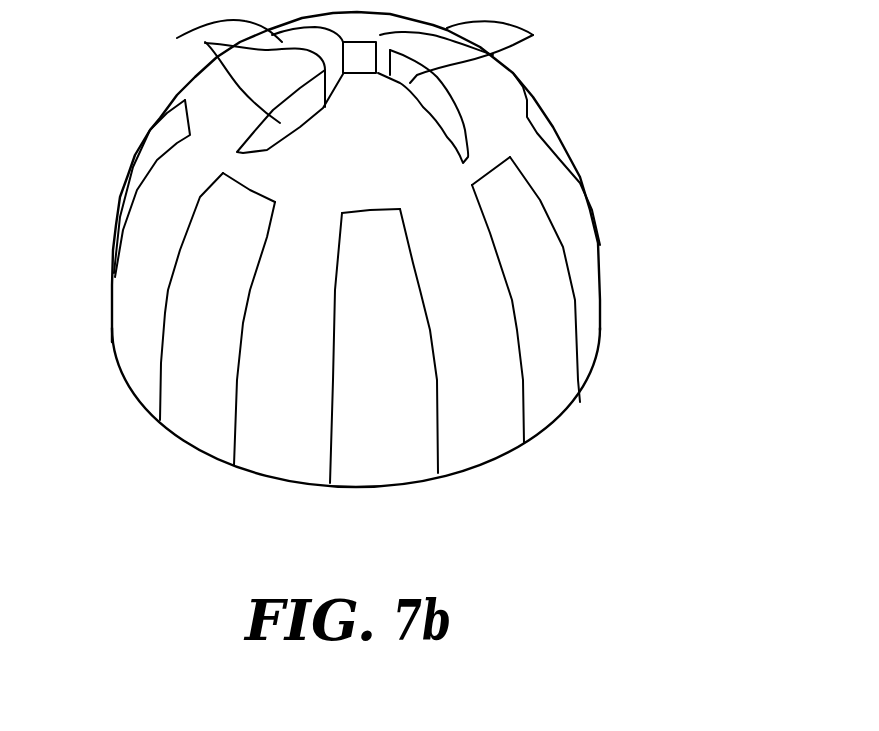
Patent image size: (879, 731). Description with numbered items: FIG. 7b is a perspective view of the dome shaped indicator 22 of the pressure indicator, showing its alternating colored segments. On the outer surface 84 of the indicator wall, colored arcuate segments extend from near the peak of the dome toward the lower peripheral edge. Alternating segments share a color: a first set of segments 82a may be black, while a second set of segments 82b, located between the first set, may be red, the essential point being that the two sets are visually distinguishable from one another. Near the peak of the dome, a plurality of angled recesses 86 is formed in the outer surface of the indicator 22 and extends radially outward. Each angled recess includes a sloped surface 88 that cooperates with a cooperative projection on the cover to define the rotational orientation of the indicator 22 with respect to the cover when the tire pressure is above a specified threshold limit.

The indicator 22 is at (568, 138).
The first set of segments 82a is at (135, 357).
The second set of segments 82b is at (153, 148).
The outer surface 84 is at (372, 157).
The angled recesses 86 is at (205, 42).
The sloped surface 88 is at (456, 127).